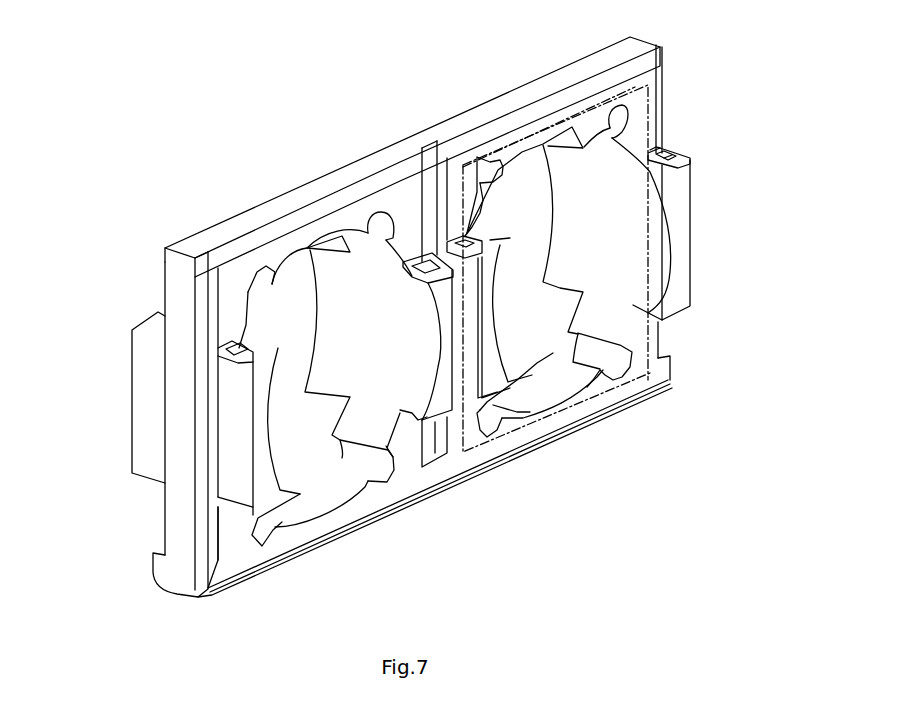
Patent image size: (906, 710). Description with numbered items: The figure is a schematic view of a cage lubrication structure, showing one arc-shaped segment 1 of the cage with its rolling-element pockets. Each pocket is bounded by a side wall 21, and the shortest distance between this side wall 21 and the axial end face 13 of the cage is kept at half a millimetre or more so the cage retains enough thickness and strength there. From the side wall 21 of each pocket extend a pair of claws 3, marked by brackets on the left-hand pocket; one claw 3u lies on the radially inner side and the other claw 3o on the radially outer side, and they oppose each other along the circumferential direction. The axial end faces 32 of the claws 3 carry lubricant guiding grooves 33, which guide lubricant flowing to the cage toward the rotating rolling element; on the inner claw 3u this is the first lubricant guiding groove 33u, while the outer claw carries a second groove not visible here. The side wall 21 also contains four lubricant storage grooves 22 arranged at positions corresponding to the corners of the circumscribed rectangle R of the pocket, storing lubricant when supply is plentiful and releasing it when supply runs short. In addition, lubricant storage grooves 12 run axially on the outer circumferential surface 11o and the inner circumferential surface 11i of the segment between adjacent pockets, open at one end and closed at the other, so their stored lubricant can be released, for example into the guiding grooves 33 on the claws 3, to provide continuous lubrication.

The arc-shaped segment 1 is at (248, 110).
The claw 3 is at (138, 355).
The claw on the radially outer side 3o is at (346, 250).
The claw on the radially inner side 3u is at (242, 455).
The inner circumferential surface 11i is at (363, 500).
The outer circumferential surface 11o is at (152, 560).
The lubricant storage groove 12 is at (163, 537).
The axial end face of the cage 13 is at (230, 230).
The side wall 21 is at (627, 240).
The lubricant storage groove 22 is at (492, 175).
The axial end face of the claw 32 is at (660, 153).
The lubricant guiding groove 33 is at (677, 163).
The first lubricant guiding groove 33u is at (255, 357).
The circumscribed rectangle of the pocket R is at (577, 403).